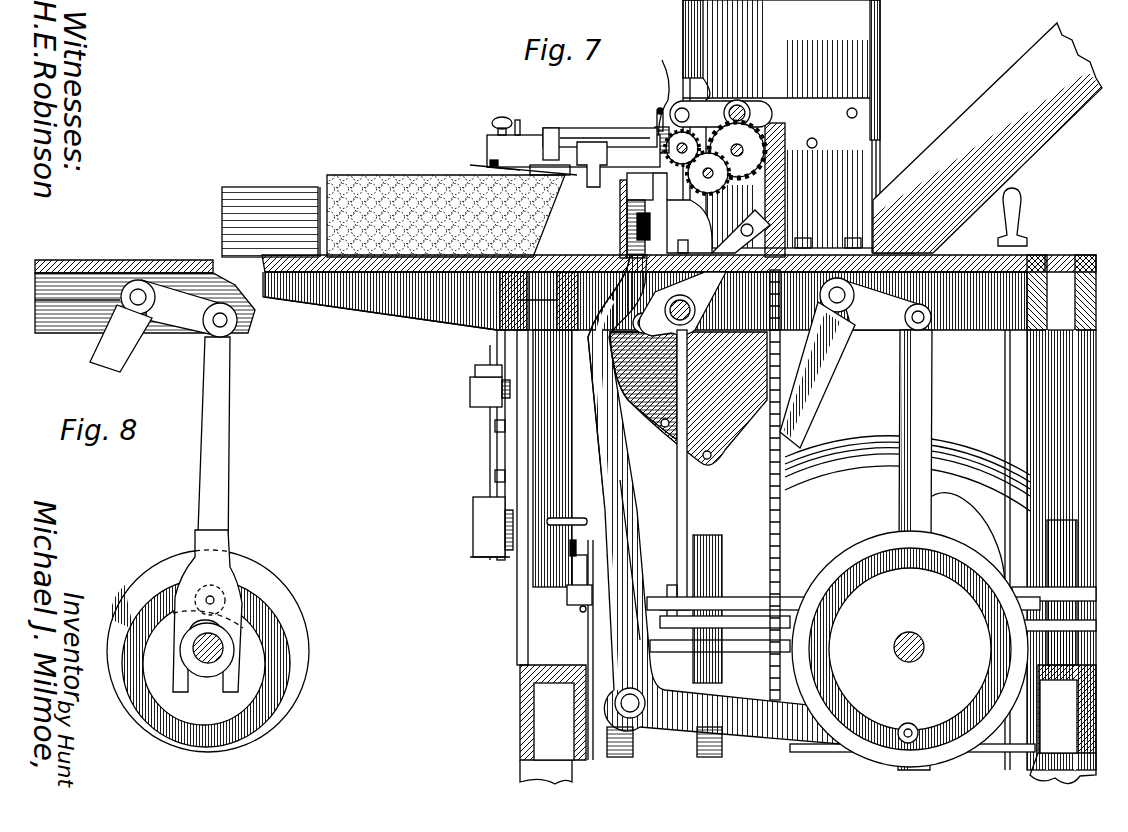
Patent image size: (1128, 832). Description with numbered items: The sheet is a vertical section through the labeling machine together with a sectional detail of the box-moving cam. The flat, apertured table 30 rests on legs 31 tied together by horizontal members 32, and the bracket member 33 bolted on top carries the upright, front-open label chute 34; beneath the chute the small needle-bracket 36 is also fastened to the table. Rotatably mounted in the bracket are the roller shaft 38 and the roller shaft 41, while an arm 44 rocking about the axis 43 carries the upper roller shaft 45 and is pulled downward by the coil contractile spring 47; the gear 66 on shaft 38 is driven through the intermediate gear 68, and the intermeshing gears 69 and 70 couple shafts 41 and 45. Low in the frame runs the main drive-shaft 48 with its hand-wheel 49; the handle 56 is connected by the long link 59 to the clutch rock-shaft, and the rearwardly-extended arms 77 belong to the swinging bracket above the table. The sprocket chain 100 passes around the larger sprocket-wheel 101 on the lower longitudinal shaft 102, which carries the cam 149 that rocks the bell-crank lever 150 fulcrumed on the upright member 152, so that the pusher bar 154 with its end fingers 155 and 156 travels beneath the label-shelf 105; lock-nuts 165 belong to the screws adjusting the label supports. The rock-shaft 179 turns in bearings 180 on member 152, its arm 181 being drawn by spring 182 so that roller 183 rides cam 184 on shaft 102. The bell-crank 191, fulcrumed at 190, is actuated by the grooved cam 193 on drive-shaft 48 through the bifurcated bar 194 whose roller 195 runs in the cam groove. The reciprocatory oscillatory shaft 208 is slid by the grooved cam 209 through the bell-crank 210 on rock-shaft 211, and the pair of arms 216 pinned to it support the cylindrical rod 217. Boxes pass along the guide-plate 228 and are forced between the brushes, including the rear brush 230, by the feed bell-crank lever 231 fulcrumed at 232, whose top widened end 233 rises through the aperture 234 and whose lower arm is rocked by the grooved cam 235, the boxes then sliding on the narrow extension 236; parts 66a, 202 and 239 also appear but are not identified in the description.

In FIG. 7, the table 30 is at (985, 260).
In FIG. 8, the table 30 is at (72, 262).
In FIG. 7, the legs 31 is at (1035, 372).
In FIG. 7, the horizontal members 32 is at (520, 708).
In FIG. 7, the bracket member 33 is at (828, 217).
In FIG. 7, the upright chute 34 is at (781, 124).
In FIG. 7, the needle-bracket 36 is at (874, 170).
In FIG. 7, the roller shaft 38 is at (778, 168).
In FIG. 7, the roller shaft 41 is at (646, 162).
In FIG. 7, the axis 43 is at (737, 100).
In FIG. 7, the arm 44 is at (686, 107).
In FIG. 7, the upper roller shaft 45 is at (691, 135).
In FIG. 7, the coil contractile spring 47 is at (660, 128).
In FIG. 7, the main drive-shaft 48 is at (922, 650).
In FIG. 8, the main drive-shaft 48 is at (207, 658).
In FIG. 7, the hand-wheel 49 is at (842, 456).
In FIG. 7, the handle 56 is at (1022, 212).
In FIG. 7, the link 59 is at (1032, 578).
In FIG. 7, the gear 66 is at (767, 113).
In FIG. 7, the pivot bracket 66a is at (718, 226).
In FIG. 7, the gear 68 is at (653, 191).
In FIG. 7, the gear 69 is at (635, 219).
In FIG. 7, the gear 70 is at (682, 100).
In FIG. 7, the rearwardly-extended arms 77 is at (716, 182).
In FIG. 7, the sprocket chain 100 is at (778, 450).
In FIG. 7, the sprocket-wheel 101 is at (790, 656).
In FIG. 7, the lower shaft 102 is at (720, 656).
In FIG. 7, the label-shelf 105 is at (527, 135).
In FIG. 7, the cam 149 is at (662, 751).
In FIG. 7, the bell-crank lever 150 is at (485, 165).
In FIG. 7, the upright member 152 is at (518, 418).
In FIG. 7, the pusher bar 154 is at (617, 140).
In FIG. 7, the end finger 155 is at (562, 130).
In FIG. 7, the end finger 156 is at (660, 116).
In FIG. 7, the lock-nuts 165 is at (982, 97).
In FIG. 7, the rock-shaft 179 is at (492, 452).
In FIG. 7, the bearings 180 is at (472, 390).
In FIG. 7, the arm 181 is at (507, 560).
In FIG. 7, the coil contractile spring 182 is at (590, 522).
In FIG. 7, the roller 183 is at (578, 560).
In FIG. 7, the cam 184 is at (580, 565).
In FIG. 7, the fulcrum 190 is at (860, 330).
In FIG. 8, the fulcrum 190 is at (138, 292).
In FIG. 7, the bell-crank 191 is at (803, 385).
In FIG. 8, the bell-crank 191 is at (113, 353).
In FIG. 8, the grooved cam 193 is at (264, 572).
In FIG. 7, the bifurcated bar 194 is at (925, 405).
In FIG. 8, the bifurcated bar 194 is at (231, 462).
In FIG. 8, the roller 195 is at (225, 600).
In FIG. 7, the block 202 is at (638, 222).
In FIG. 7, the reciprocatory oscillatory shaft 208 is at (695, 310).
In FIG. 7, the grooved cam 209 is at (712, 533).
In FIG. 7, the bell-crank 210 is at (684, 470).
In FIG. 7, the rock-shaft 211 is at (666, 590).
In FIG. 7, the pair of arms 216 is at (682, 304).
In FIG. 7, the cylindrical rod 217 is at (643, 333).
In FIG. 7, the guide-plate 228 is at (604, 200).
In FIG. 7, the brush 230 is at (365, 205).
In FIG. 7, the feed bell-crank lever 231 is at (630, 505).
In FIG. 7, the fulcrum 232 is at (646, 704).
In FIG. 7, the top widened end 233 is at (622, 243).
In FIG. 7, the aperture 234 is at (660, 262).
In FIG. 7, the grooved cam 235 is at (960, 698).
In FIG. 7, the narrow extension 236 is at (365, 275).
In FIG. 7, the box 239 is at (272, 192).